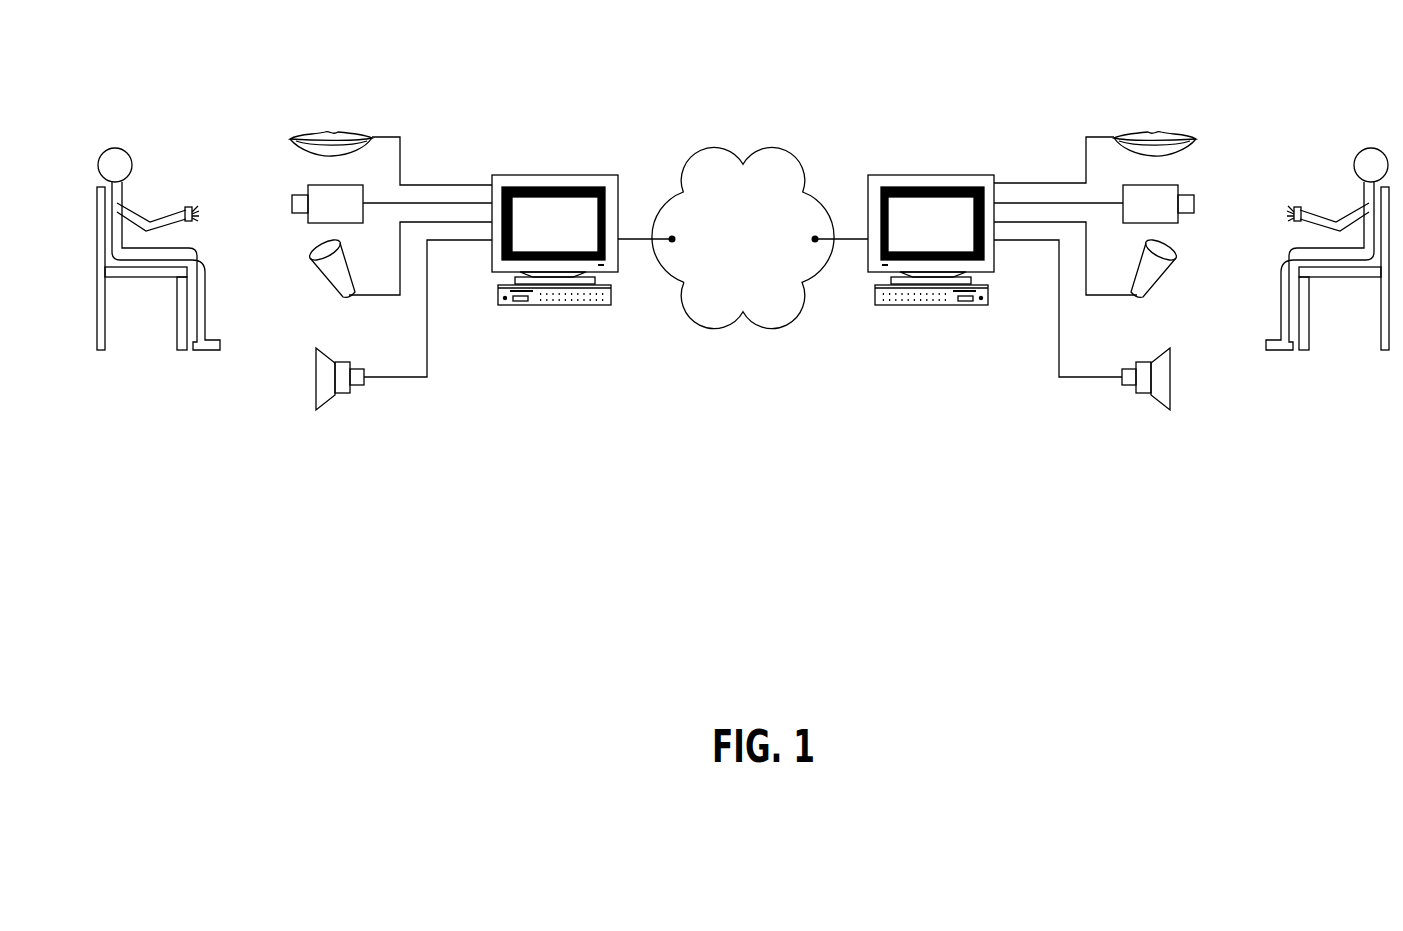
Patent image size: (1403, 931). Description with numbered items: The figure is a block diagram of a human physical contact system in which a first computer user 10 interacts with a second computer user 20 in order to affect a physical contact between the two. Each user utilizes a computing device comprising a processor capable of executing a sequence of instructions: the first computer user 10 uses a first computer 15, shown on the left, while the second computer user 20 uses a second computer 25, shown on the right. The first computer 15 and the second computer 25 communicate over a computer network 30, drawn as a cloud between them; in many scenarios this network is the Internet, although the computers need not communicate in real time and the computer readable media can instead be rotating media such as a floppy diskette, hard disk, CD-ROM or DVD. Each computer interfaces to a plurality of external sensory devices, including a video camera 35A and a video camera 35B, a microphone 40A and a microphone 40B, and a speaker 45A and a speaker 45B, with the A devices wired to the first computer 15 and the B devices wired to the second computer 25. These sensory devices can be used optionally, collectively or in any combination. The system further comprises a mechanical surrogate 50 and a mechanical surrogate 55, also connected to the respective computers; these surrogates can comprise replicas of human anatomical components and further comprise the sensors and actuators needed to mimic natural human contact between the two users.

The first computer user 10 is at (113, 147).
The second computer user 20 is at (1366, 145).
The first computer 15 is at (546, 175).
The second computer 25 is at (929, 175).
The computer network 30 is at (713, 147).
The video camera 35A is at (290, 199).
The video camera 35B is at (1197, 201).
The microphone 40A is at (310, 259).
The microphone 40B is at (1160, 278).
The speaker 45A is at (341, 396).
The speaker 45B is at (1150, 394).
The mechanical surrogate 50 is at (331, 129).
The mechanical surrogate 55 is at (1152, 129).